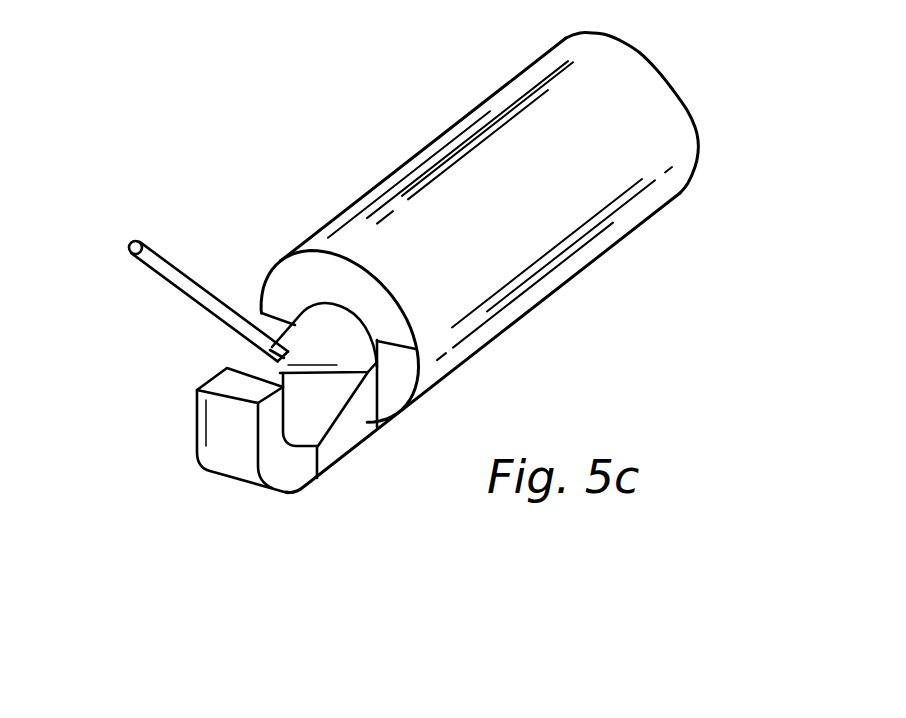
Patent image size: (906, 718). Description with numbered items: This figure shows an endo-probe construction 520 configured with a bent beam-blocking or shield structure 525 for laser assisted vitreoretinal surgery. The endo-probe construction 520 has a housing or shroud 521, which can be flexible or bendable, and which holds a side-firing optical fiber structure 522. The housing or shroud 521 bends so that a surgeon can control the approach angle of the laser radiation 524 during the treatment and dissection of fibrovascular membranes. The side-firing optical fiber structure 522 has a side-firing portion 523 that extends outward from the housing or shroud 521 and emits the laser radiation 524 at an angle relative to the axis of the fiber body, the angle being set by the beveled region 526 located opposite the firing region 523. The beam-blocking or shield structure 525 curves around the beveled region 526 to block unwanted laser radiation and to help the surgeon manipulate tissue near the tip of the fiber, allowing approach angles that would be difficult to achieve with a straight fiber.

The endo-probe construction 520 is at (231, 73).
The housing or shroud 521 is at (567, 279).
The side-firing optical fiber structure 522 is at (325, 345).
The side-firing portion 523 is at (305, 352).
The laser radiation 524 is at (129, 244).
The beam-blocking or shield structure 525 is at (220, 442).
The beveled region 526 is at (275, 365).